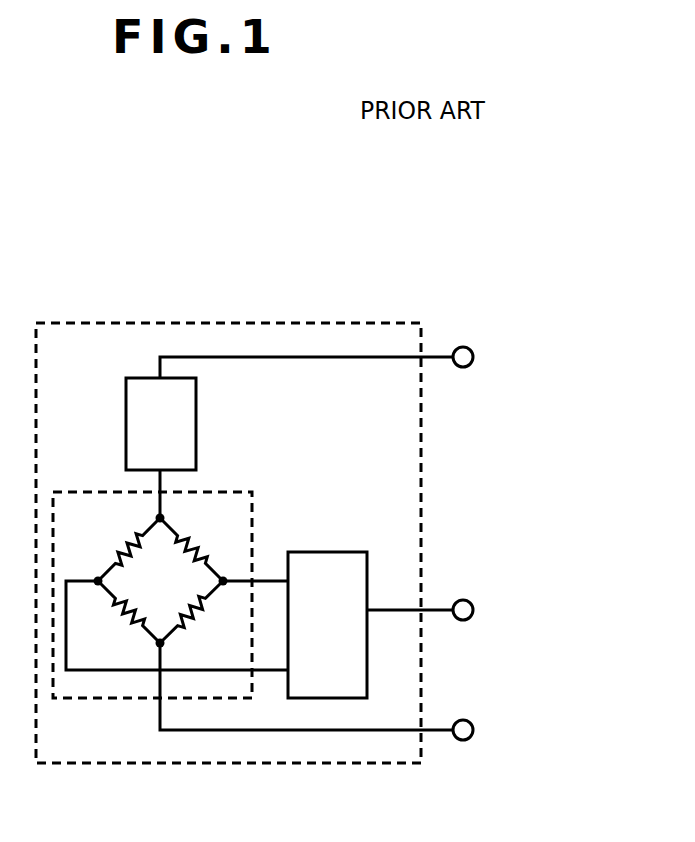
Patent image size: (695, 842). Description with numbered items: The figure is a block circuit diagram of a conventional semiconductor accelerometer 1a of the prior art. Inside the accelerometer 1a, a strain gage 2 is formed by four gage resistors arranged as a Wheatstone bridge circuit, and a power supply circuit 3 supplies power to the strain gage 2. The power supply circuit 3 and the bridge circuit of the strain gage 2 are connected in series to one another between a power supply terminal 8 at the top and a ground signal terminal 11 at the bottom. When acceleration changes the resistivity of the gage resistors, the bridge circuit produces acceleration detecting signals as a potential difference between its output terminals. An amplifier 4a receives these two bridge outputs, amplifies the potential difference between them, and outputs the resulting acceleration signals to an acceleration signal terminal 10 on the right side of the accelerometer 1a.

The conventional semiconductor accelerometer 1a is at (421, 492).
The strain gage 2 is at (218, 489).
The power supply circuit 3 is at (196, 405).
The amplifier 4a is at (312, 552).
The power supply terminal 8 is at (474, 357).
The acceleration signal terminal 10 is at (474, 610).
The ground signal terminal 11 is at (474, 730).